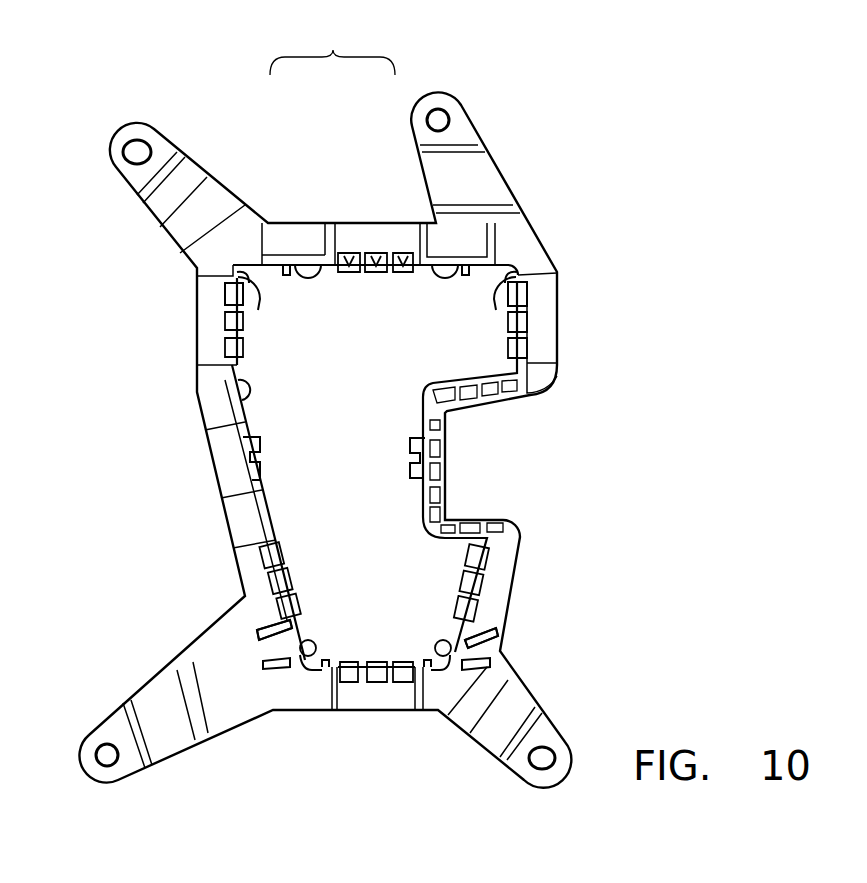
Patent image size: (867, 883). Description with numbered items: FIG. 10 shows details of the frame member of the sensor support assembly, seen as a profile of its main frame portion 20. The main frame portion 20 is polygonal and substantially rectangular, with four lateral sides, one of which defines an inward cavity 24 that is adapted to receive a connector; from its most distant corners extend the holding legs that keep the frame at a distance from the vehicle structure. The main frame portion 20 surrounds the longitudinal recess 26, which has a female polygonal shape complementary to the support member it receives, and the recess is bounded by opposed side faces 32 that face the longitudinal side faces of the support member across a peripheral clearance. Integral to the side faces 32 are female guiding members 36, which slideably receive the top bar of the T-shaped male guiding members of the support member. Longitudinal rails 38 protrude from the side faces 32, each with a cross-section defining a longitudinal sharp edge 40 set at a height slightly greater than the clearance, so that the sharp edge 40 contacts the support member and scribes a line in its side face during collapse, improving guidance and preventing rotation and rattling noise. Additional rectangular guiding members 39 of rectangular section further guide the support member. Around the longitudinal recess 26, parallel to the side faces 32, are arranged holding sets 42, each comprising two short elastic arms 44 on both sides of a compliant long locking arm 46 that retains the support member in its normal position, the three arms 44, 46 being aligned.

The main frame portion 20 is at (557, 385).
The inward cavity 24 is at (470, 504).
The longitudinal recess 26 is at (338, 395).
The side face of the recess 32 is at (318, 265).
The female guiding member 36 is at (248, 458).
The longitudinal rail 38 is at (232, 303).
The rectangular guiding member 39 is at (287, 268).
The longitudinal sharp edge 40 is at (372, 459).
The holding set 42 is at (348, 805).
The short elastic arm 44 is at (342, 260).
The long locking arm 46 is at (370, 255).